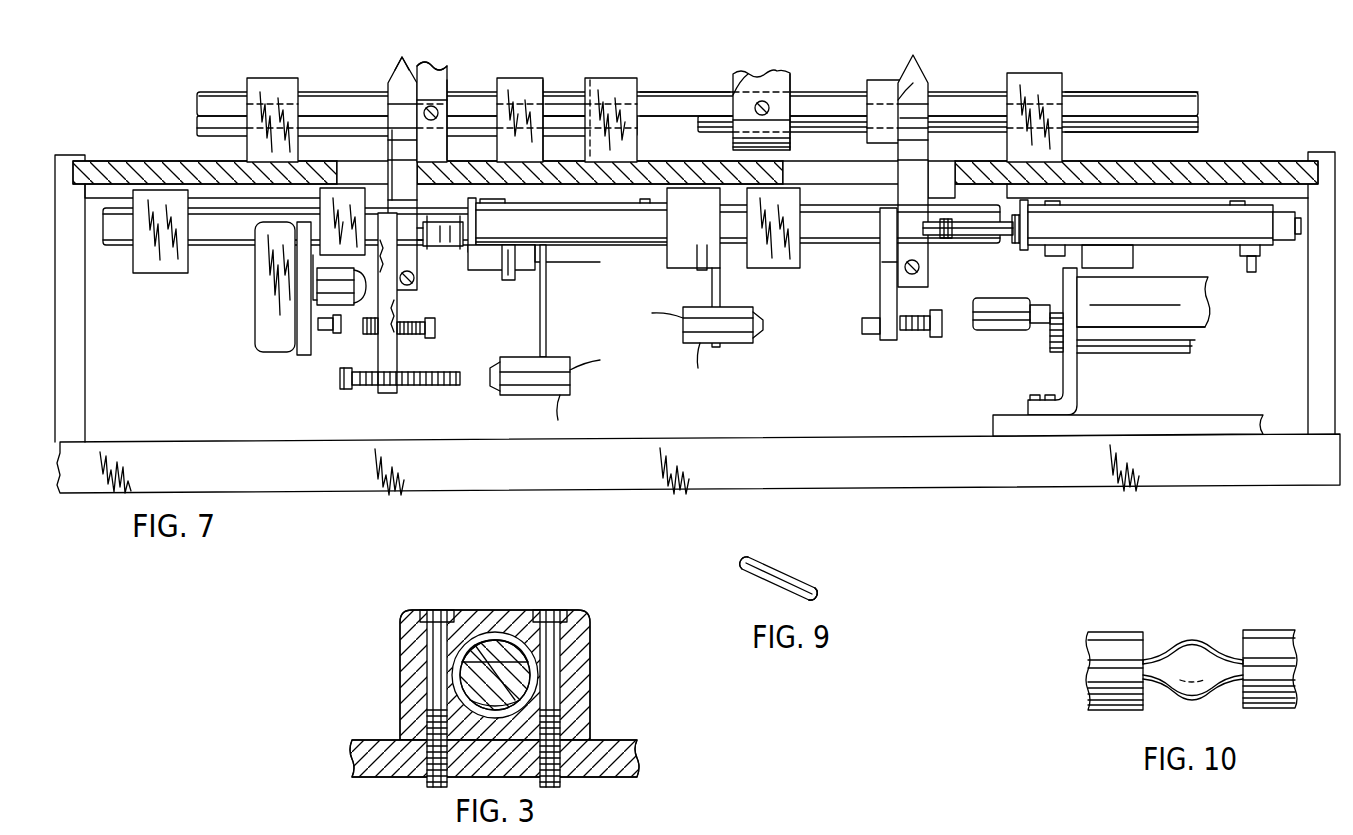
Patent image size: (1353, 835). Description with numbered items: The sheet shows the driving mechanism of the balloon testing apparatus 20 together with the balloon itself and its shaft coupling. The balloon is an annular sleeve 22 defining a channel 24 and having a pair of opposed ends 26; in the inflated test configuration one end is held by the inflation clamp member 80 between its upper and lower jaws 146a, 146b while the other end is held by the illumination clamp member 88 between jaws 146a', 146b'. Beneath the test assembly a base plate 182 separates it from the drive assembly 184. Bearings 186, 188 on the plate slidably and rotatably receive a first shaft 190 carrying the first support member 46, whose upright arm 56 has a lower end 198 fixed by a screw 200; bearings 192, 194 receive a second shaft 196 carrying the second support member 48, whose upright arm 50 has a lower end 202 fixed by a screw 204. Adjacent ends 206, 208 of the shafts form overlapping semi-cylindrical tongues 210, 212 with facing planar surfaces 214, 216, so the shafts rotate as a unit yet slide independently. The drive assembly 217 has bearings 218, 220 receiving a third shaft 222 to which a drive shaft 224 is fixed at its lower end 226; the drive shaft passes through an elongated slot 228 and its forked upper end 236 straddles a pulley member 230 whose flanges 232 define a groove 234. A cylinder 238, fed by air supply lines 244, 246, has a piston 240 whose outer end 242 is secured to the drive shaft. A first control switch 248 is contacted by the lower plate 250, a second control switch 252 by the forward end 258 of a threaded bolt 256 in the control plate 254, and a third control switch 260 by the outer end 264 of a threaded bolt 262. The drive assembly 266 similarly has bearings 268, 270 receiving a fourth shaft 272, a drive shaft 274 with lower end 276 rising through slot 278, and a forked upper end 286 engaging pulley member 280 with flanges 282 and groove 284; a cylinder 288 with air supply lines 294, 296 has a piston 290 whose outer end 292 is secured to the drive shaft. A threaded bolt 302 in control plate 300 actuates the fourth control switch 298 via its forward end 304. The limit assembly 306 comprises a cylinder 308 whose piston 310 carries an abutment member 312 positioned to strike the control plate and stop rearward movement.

In FIG. 7, the apparatus 20 is at (1298, 321).
In FIG. 9, the annular sleeve 22 is at (790, 575).
In FIG. 10, the annular sleeve 22 is at (1190, 645).
In FIG. 9, the channel 24 is at (820, 598).
In FIG. 9, the opposed ends 26 is at (750, 560).
In FIG. 10, the opposed ends 26 is at (1150, 660).
In FIG. 7, the first support member 46 is at (440, 50).
In FIG. 7, the second support member 48 is at (784, 66).
In FIG. 7, the upright arm 50 is at (745, 93).
In FIG. 7, the upright arm 56 is at (427, 62).
In FIG. 10, the inflation clamp member 80 is at (1123, 627).
In FIG. 10, the illumination clamp member 88 is at (1270, 624).
In FIG. 10, the upper jaw 146a is at (1081, 645).
In FIG. 10, the lower jaw 146b is at (1081, 701).
In FIG. 10, the upper jaw 146a' is at (1291, 623).
In FIG. 10, the lower jaw 146b' is at (1291, 711).
In FIG. 7, the base plate 182 is at (1286, 168).
In FIG. 7, the drive assembly 184 is at (953, 491).
In FIG. 7, the bearing 186 is at (255, 80).
In FIG. 7, the bearing 188 is at (545, 78).
In FIG. 7, the first shaft 190 is at (302, 91).
In FIG. 3, the first shaft 190 is at (462, 690).
In FIG. 7, the bearing 192 is at (618, 78).
In FIG. 3, the bearing 192 is at (585, 636).
In FIG. 7, the bearing 194 is at (1062, 80).
In FIG. 7, the second shaft 196 is at (1135, 97).
In FIG. 3, the second shaft 196 is at (508, 654).
In FIG. 7, the lower end 198 is at (448, 82).
In FIG. 7, the screw 200 is at (438, 118).
In FIG. 7, the lower end 202 is at (786, 100).
In FIG. 7, the screw 204 is at (770, 113).
In FIG. 7, the adjacent end 206 is at (492, 80).
In FIG. 7, the adjacent end 208 is at (658, 93).
In FIG. 7, the semi-cylindrical tongue 210 is at (572, 125).
In FIG. 3, the semi-cylindrical tongue 210 is at (515, 697).
In FIG. 7, the semi-cylindrical tongue 212 is at (608, 80).
In FIG. 3, the semi-cylindrical tongue 212 is at (483, 648).
In FIG. 7, the planar surface 214 is at (560, 116).
In FIG. 3, the planar surface 214 is at (460, 666).
In FIG. 7, the planar surface 216 is at (668, 126).
In FIG. 3, the planar surface 216 is at (522, 680).
In FIG. 7, the drive assembly 217 is at (612, 252).
In FIG. 7, the bearing 218 is at (140, 266).
In FIG. 7, the bearing 220 is at (528, 268).
In FIG. 7, the third shaft 222 is at (226, 242).
In FIG. 7, the drive shaft 224 is at (400, 190).
In FIG. 7, the lower end 226 is at (418, 250).
In FIG. 7, the elongated slot 228 is at (352, 176).
In FIG. 7, the pulley member 230 is at (393, 130).
In FIG. 7, the annular flanges 232 is at (402, 56).
In FIG. 7, the annular groove 234 is at (412, 100).
In FIG. 7, the forked upper end 236 is at (394, 130).
In FIG. 7, the cylinder 238 is at (568, 231).
In FIG. 7, the piston 240 is at (510, 280).
In FIG. 7, the outer end 242 is at (455, 249).
In FIG. 7, the air supply line 244 is at (546, 290).
In FIG. 7, the air supply line 246 is at (695, 265).
In FIG. 7, the first control switch 248 is at (323, 285).
In FIG. 7, the lower plate 250 is at (400, 292).
In FIG. 7, the second control switch 252 is at (318, 326).
In FIG. 7, the control plate 254 is at (397, 320).
In FIG. 7, the threaded bolt 256 is at (433, 336).
In FIG. 7, the forward end 258 is at (365, 335).
In FIG. 7, the third control switch 260 is at (518, 396).
In FIG. 7, the threaded bolt 262 is at (346, 390).
In FIG. 7, the outer end 264 is at (452, 386).
In FIG. 7, the drive assembly 266 is at (1211, 190).
In FIG. 7, the bearing 268 is at (758, 269).
In FIG. 7, the bearing 270 is at (1133, 262).
In FIG. 7, the fourth shaft 272 is at (822, 246).
In FIG. 7, the drive shaft 274 is at (915, 175).
In FIG. 7, the lower end 276 is at (882, 262).
In FIG. 7, the elongated slot 278 is at (865, 185).
In FIG. 7, the pulley member 280 is at (928, 76).
In FIG. 7, the annular flanges 282 is at (917, 57).
In FIG. 7, the annular groove 284 is at (920, 118).
In FIG. 7, the forked upper end 286 is at (922, 100).
In FIG. 7, the cylinder 288 is at (1156, 231).
In FIG. 7, the piston 290 is at (985, 237).
In FIG. 7, the outer end 292 is at (942, 240).
In FIG. 7, the air supply line 294 is at (1045, 258).
In FIG. 7, the air supply line 296 is at (1251, 273).
In FIG. 7, the fourth control switch 298 is at (743, 344).
In FIG. 7, the control plate 300 is at (880, 300).
In FIG. 7, the threaded bolt 302 is at (931, 338).
In FIG. 7, the forward end 304 is at (870, 334).
In FIG. 7, the limit assembly 306 is at (1110, 366).
In FIG. 7, the cylinder 308 is at (1151, 304).
In FIG. 7, the piston 310 is at (1047, 340).
In FIG. 7, the abutment member 312 is at (992, 332).